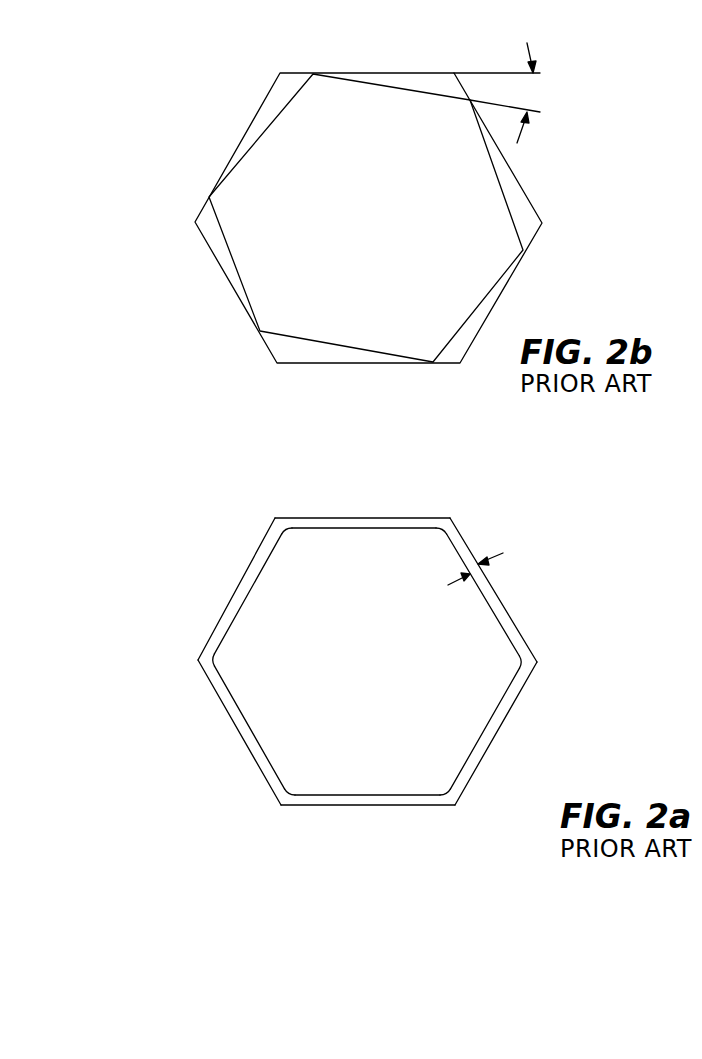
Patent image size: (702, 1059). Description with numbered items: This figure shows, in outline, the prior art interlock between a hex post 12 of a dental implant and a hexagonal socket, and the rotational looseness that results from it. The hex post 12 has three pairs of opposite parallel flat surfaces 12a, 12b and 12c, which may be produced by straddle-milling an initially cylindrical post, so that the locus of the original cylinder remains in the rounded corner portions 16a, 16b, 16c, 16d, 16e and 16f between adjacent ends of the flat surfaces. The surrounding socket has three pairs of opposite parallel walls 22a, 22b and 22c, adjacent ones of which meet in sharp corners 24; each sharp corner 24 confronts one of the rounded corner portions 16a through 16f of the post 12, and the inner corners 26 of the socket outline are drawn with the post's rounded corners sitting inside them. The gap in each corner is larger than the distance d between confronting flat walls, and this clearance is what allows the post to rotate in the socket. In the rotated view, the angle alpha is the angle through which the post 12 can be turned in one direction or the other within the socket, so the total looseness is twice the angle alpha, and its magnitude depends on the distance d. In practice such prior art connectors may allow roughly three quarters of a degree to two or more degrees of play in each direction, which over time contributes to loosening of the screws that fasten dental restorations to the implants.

In FIG. 2B, the hex post 12 is at (400, 186).
In FIG. 2A, the hex post 12 is at (366, 663).
In FIG. 2B, the sharp corners 24 is at (378, 240).
In FIG. 2A, the sharp corners 24 is at (366, 663).
In FIG. 2A, the inner corner 26 is at (369, 663).
In FIG. 2A, the opposite parallel walls 22a is at (365, 663).
In FIG. 2A, the opposite parallel walls 22b is at (364, 661).
In FIG. 2A, the opposite parallel walls 22c is at (515, 590).
In FIG. 2A, the opposite parallel flat surfaces 12a is at (366, 661).
In FIG. 2A, the opposite parallel flat surfaces 12b is at (366, 661).
In FIG. 2A, the opposite parallel flat surfaces 12c is at (367, 661).
In FIG. 2A, the corner portion 16a is at (307, 560).
In FIG. 2A, the corner portion 16b is at (251, 662).
In FIG. 2A, the corner portion 16c is at (310, 759).
In FIG. 2A, the corner portion 16d is at (425, 759).
In FIG. 2A, the corner portion 16e is at (480, 663).
In FIG. 2A, the corner portion 16f is at (424, 560).
In FIG. 2A, the distance d is at (484, 548).
In FIG. 2B, the angle alpha is at (497, 93).